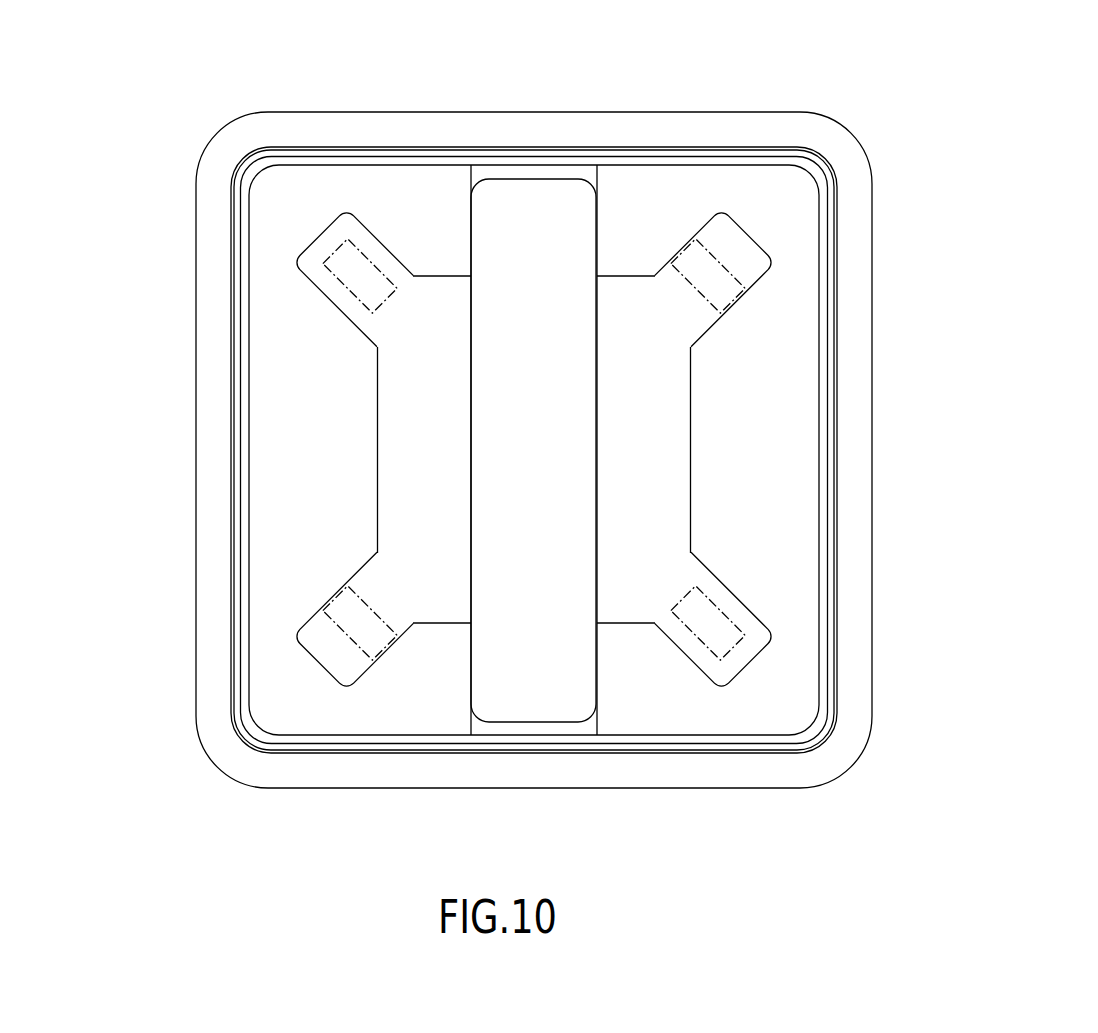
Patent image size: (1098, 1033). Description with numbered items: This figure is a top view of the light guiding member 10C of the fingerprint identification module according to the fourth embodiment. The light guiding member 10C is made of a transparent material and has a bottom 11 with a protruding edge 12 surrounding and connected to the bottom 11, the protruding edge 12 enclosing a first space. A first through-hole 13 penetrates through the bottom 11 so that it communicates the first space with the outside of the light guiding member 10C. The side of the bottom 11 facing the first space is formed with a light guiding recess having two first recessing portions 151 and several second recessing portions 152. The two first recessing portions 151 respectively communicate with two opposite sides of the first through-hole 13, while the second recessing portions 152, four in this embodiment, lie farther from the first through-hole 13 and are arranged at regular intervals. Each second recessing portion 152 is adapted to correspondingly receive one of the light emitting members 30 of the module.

The light guiding member 10C is at (902, 140).
The bottom 11 is at (740, 515).
The protruding edge 12 is at (855, 407).
The first through-hole 13 is at (533, 288).
The first recessing portion 151 is at (422, 302).
The second recessing portion 152 is at (317, 247).
The light emitting member 30 is at (743, 637).